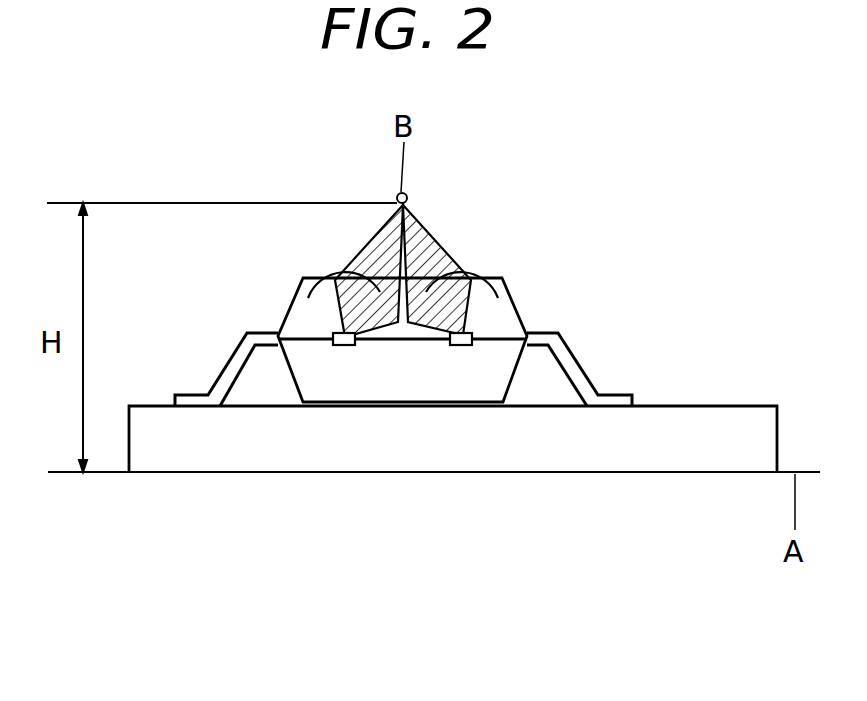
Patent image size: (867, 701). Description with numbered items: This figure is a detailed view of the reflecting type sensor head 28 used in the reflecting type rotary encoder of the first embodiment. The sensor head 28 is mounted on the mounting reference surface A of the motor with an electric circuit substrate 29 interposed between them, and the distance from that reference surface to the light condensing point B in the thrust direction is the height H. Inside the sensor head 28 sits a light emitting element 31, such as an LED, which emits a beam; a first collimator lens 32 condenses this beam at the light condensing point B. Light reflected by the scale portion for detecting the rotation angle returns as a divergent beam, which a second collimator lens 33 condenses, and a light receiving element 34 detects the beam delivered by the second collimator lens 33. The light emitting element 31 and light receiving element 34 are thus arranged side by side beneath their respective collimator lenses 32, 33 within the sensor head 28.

The reflecting type sensor head 28 is at (283, 312).
The electric circuit substrate 29 is at (219, 447).
The light emitting element 31 is at (343, 345).
The first collimator lens 32 is at (317, 277).
The second collimator lens 33 is at (492, 277).
The light receiving element 34 is at (462, 345).